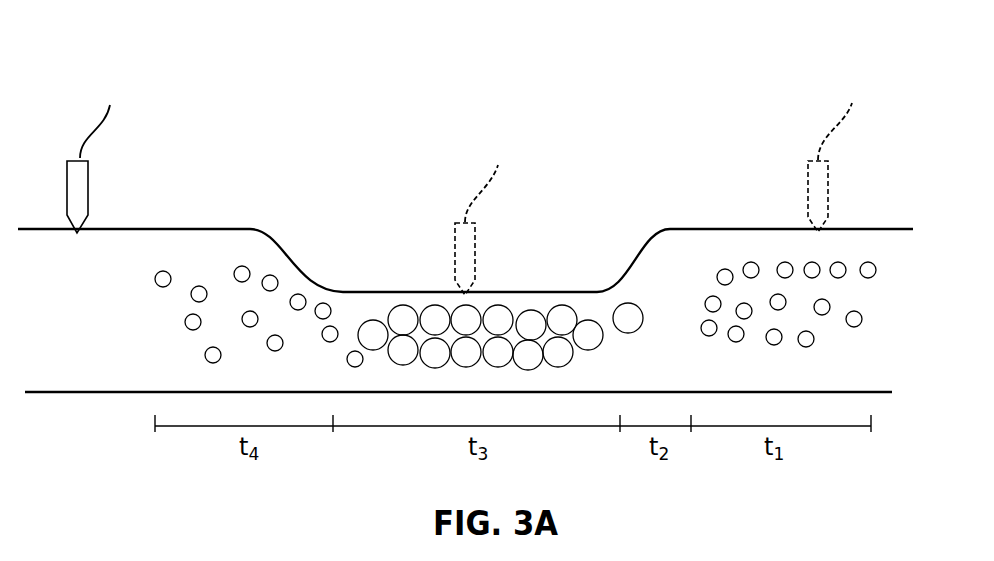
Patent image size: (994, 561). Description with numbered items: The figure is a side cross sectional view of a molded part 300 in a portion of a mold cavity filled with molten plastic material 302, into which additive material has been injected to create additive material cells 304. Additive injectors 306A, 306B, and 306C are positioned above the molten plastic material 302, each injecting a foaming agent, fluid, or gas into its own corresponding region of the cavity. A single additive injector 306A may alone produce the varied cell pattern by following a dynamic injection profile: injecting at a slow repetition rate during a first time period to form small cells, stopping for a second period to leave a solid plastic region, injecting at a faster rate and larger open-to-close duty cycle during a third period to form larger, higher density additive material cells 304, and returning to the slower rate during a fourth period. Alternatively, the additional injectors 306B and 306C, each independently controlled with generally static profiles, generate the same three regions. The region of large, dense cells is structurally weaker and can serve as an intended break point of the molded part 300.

The molded part 300 is at (267, 54).
The molten plastic material 302 is at (95, 374).
The additive material cells 304 is at (298, 295).
The additive injector 306A is at (88, 185).
The additive injector 306B is at (475, 240).
The additive injector 306C is at (828, 195).